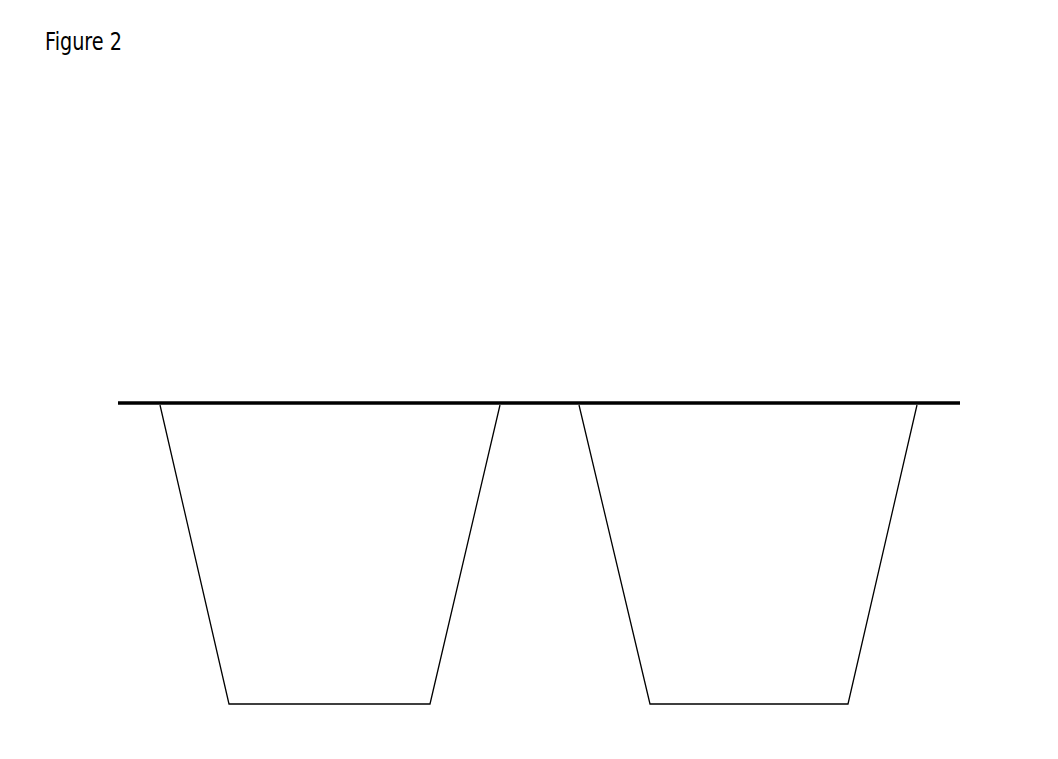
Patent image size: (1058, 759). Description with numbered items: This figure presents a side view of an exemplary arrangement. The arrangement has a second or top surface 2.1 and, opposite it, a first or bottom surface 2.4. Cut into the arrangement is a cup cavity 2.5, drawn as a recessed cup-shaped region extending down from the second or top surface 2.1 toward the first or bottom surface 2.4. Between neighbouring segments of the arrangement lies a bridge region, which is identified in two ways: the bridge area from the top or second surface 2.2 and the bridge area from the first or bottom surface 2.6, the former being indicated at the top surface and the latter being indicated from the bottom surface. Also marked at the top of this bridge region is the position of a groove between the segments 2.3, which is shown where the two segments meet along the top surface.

The second or top surface 2.1 is at (539, 283).
The bridge area from the top or second surface 2.2 is at (516, 380).
The position of a groove between the segments 2.3 is at (538, 380).
The first or bottom surface 2.4 is at (144, 438).
The cup cavity 2.5 is at (220, 550).
The bridge area from the first or bottom surface 2.6 is at (514, 438).